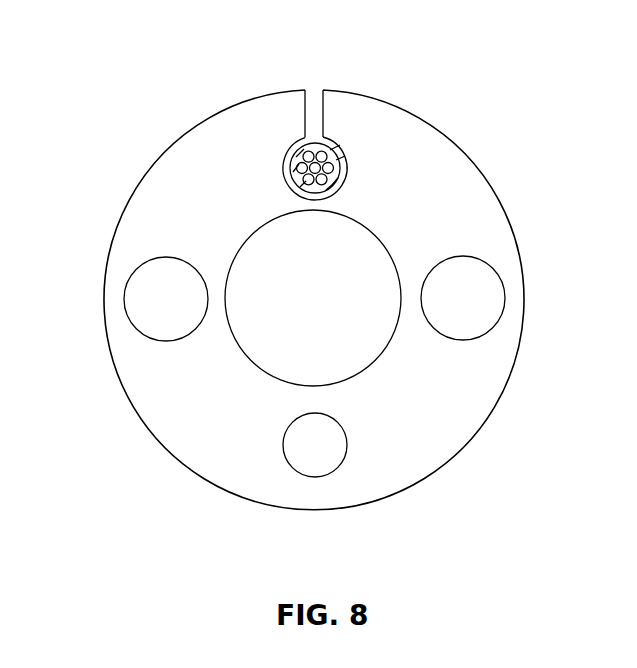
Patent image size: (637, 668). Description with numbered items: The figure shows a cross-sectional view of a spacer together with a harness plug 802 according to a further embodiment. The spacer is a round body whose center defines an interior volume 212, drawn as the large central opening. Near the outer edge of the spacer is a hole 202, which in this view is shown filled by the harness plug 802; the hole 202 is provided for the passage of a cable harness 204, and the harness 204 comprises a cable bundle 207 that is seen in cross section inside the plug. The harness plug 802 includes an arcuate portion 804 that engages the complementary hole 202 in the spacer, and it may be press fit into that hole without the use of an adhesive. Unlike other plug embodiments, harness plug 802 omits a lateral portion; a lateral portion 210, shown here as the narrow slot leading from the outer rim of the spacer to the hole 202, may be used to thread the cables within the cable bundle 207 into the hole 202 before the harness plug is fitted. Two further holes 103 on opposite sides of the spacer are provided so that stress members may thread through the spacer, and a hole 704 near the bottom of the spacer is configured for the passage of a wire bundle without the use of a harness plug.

The cable harness 204 is at (196, 51).
The lateral portion 210 is at (313, 100).
The cable bundle 207 is at (291, 160).
The hole 202 is at (339, 188).
The harness plug 802 is at (334, 148).
The arcuate portion 804 is at (347, 157).
The interior volume 212 is at (313, 298).
The holes 103 is at (124, 298).
The hole 704 is at (314, 478).